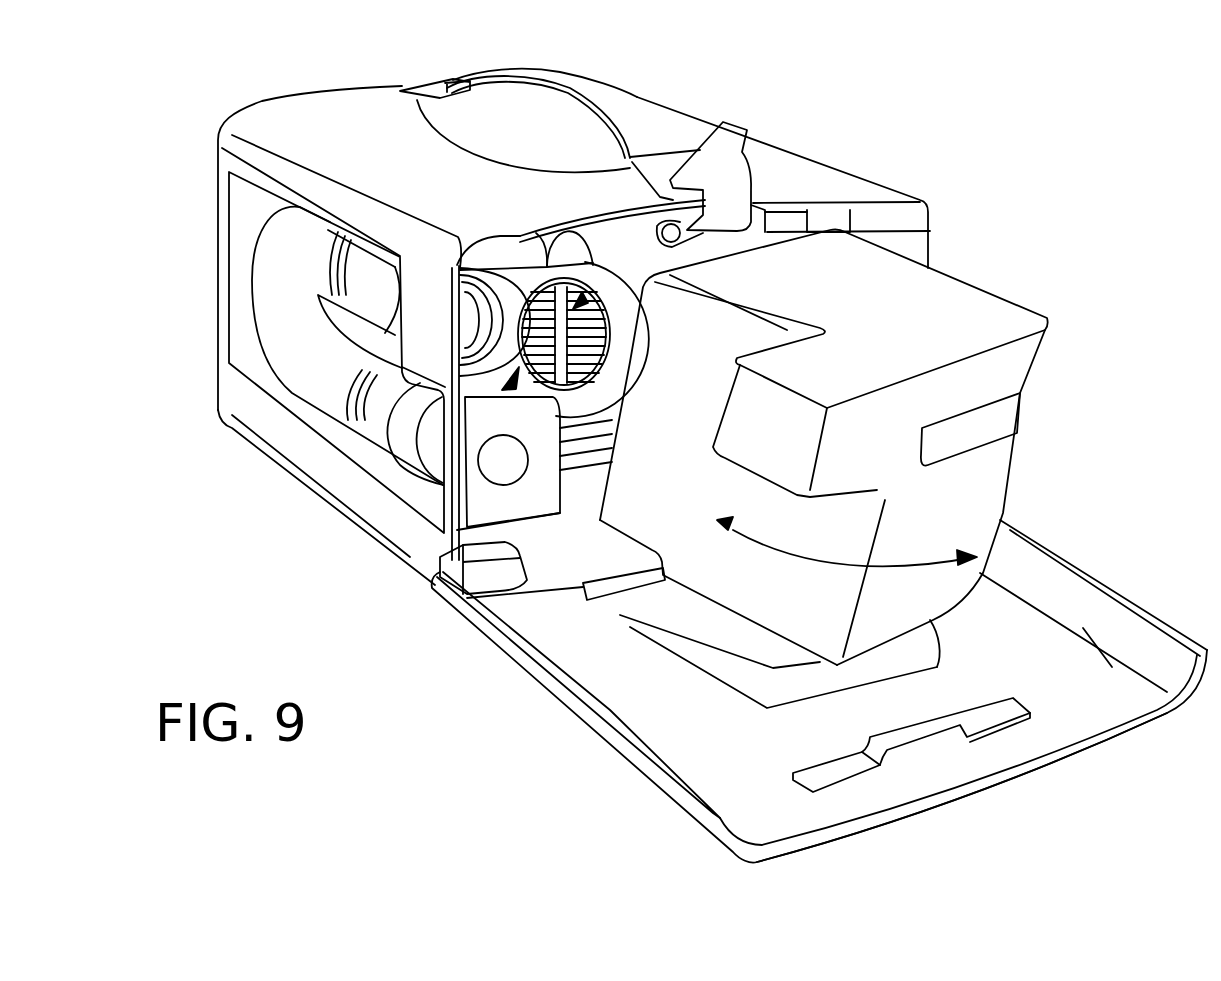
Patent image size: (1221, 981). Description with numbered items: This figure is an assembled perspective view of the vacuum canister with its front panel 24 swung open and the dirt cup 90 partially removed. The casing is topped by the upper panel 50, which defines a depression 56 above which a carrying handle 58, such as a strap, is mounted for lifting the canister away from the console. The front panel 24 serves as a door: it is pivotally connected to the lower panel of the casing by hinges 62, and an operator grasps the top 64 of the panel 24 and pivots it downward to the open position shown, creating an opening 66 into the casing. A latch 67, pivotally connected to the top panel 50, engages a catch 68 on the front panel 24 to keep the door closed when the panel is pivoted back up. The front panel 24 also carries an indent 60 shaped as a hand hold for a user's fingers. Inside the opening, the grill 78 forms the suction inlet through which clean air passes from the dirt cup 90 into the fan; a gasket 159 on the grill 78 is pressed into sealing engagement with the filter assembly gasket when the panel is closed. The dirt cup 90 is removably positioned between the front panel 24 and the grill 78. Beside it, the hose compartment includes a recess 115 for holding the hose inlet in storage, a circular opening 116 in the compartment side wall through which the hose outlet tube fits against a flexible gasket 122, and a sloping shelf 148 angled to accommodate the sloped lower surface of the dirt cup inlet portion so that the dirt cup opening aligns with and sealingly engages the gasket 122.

The front panel 24 is at (1147, 643).
The upper panel 50 is at (318, 103).
The depression 56 is at (470, 117).
The carrying handle 58 is at (570, 80).
The indent 60 is at (737, 673).
The hinges 62 is at (433, 573).
The top 64 is at (1065, 753).
The opening 66 is at (520, 238).
The latch 67 is at (733, 187).
The catch 68 is at (923, 727).
The grill 78 is at (578, 302).
The dirt cup 90 is at (1007, 317).
The recess 115 is at (432, 500).
The circular opening 116 is at (470, 330).
The flexible gasket 122 is at (470, 367).
The sloping shelf 148 is at (556, 400).
The gasket 159 is at (632, 262).